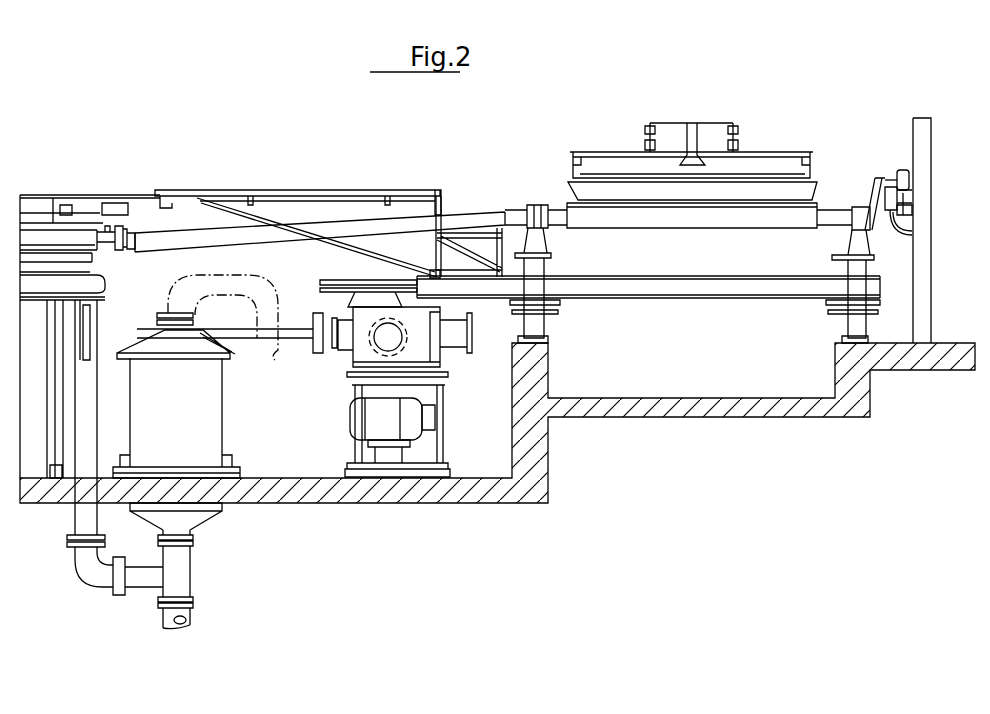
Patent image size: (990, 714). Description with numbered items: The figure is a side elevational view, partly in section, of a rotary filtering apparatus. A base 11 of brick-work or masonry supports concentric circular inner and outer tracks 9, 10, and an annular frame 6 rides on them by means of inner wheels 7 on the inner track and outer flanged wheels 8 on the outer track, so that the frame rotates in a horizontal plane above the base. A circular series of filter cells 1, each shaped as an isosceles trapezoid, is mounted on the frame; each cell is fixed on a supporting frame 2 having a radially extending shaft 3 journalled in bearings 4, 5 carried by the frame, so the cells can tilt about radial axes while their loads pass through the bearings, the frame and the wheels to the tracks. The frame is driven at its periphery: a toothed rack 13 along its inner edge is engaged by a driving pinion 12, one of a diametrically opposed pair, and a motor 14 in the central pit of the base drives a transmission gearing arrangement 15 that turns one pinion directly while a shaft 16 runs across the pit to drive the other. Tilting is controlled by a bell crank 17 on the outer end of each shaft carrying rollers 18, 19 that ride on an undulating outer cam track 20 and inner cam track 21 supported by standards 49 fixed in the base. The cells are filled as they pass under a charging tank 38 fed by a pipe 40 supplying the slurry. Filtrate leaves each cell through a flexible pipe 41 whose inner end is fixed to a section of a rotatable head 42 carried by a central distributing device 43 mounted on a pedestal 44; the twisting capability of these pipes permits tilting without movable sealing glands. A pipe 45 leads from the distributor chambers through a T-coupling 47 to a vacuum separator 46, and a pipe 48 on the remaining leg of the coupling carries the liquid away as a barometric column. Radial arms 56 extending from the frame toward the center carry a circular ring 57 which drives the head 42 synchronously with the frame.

The filter cells 1 is at (578, 191).
The supporting frame 2 is at (805, 220).
The radially extending shaft 3 is at (838, 222).
The bearing 4 is at (537, 205).
The bearing 5 is at (860, 207).
The annular frame 6 is at (695, 290).
The inner wheels 7 is at (545, 325).
The outer flanged wheels 8 is at (848, 330).
The inner track 9 is at (527, 338).
The outer track 10 is at (840, 340).
The base 11 is at (543, 373).
The driving pinion 12 is at (372, 282).
The toothed rack 13 is at (428, 275).
The motor 14 is at (422, 408).
The transmission gearing arrangement 15 is at (367, 342).
The shaft 16 is at (244, 340).
The bell crank 17 is at (870, 222).
The roller 18 is at (900, 170).
The roller 19 is at (912, 211).
The outer cam track 20 is at (912, 193).
The inner cam track 21 is at (912, 232).
The charging tank 38 is at (598, 160).
The pipe 40 is at (692, 125).
The pipe 41 is at (118, 230).
The rotatable head 42 is at (103, 246).
The central distributing device 43 is at (105, 287).
The supporting frame or pedestal 44 is at (57, 470).
The pipe 45 is at (93, 397).
The vacuum separator 46 is at (214, 431).
The T-coupling 47 is at (186, 560).
The pipe 48 is at (190, 612).
The standards 49 is at (927, 296).
The radial arms 56 is at (322, 188).
The circular ring 57 is at (177, 203).